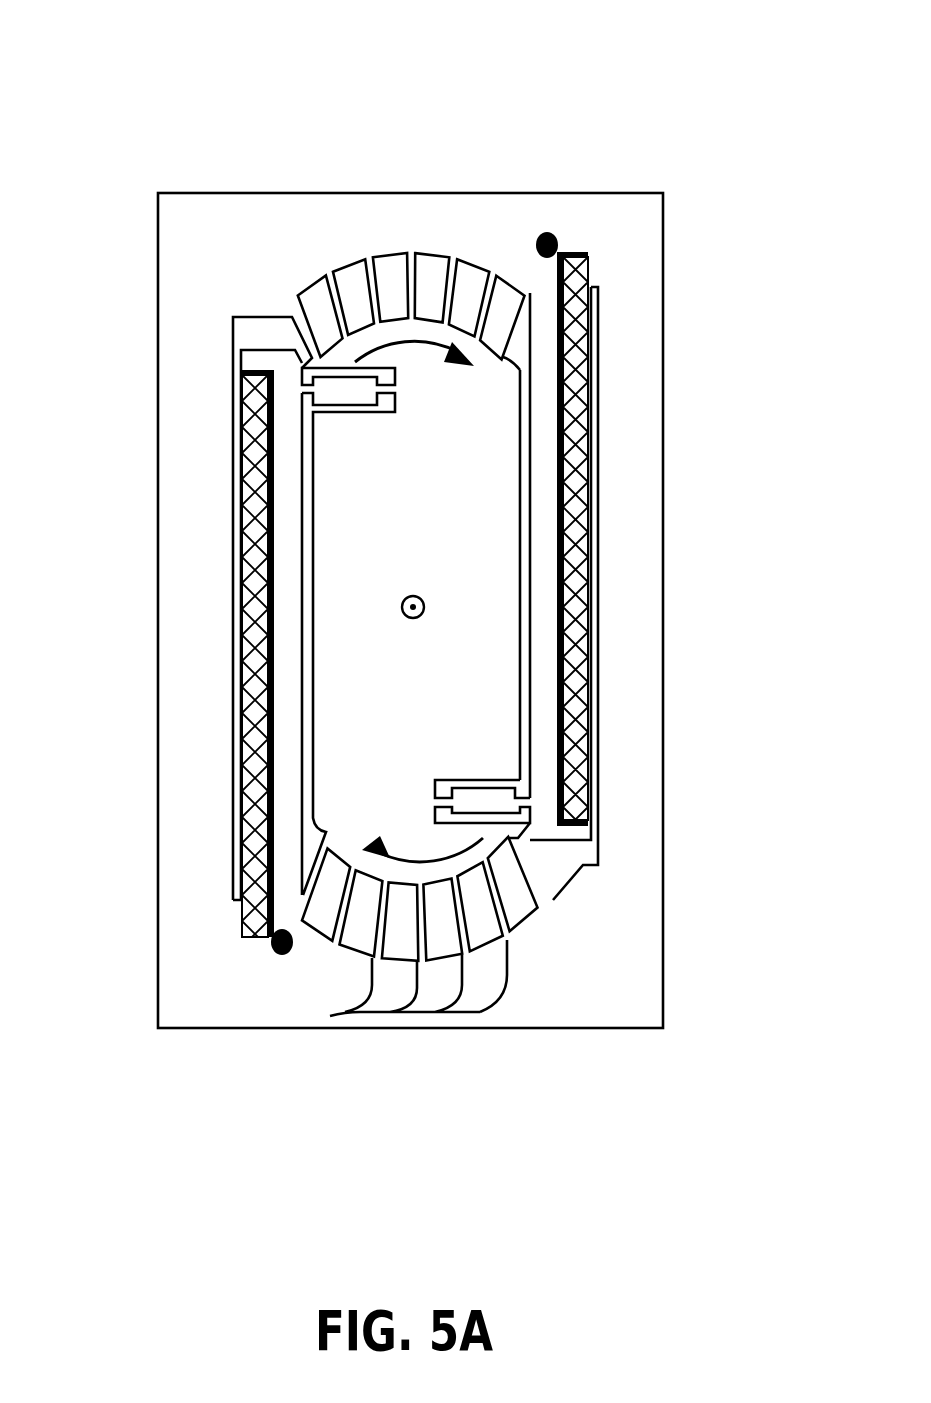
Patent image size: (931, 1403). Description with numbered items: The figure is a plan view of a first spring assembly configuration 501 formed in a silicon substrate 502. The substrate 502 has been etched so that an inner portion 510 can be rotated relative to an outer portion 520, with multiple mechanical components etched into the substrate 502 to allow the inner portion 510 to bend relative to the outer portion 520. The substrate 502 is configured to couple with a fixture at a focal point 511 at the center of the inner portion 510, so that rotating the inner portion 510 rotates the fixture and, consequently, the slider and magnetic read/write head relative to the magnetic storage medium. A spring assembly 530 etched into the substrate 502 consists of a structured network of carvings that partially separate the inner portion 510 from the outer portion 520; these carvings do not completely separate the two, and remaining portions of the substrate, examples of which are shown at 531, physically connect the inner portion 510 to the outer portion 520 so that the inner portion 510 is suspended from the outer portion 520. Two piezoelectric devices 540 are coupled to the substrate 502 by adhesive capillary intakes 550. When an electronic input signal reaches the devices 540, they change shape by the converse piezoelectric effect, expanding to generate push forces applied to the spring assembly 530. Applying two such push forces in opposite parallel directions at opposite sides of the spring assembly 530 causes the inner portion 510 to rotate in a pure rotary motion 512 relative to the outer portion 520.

The first spring assembly configuration 501 is at (212, 33).
The silicon substrate 502 is at (215, 192).
The inner portion 510 is at (407, 679).
The focal point 511 is at (424, 598).
The pure rotary motion 512 is at (466, 368).
The outer portion 520 is at (612, 1009).
The spring assembly 530 is at (258, 331).
The remaining substrate portions 531 is at (355, 1012).
The piezoelectric devices 540 is at (575, 306).
The adhesive capillary intakes 550 is at (549, 240).